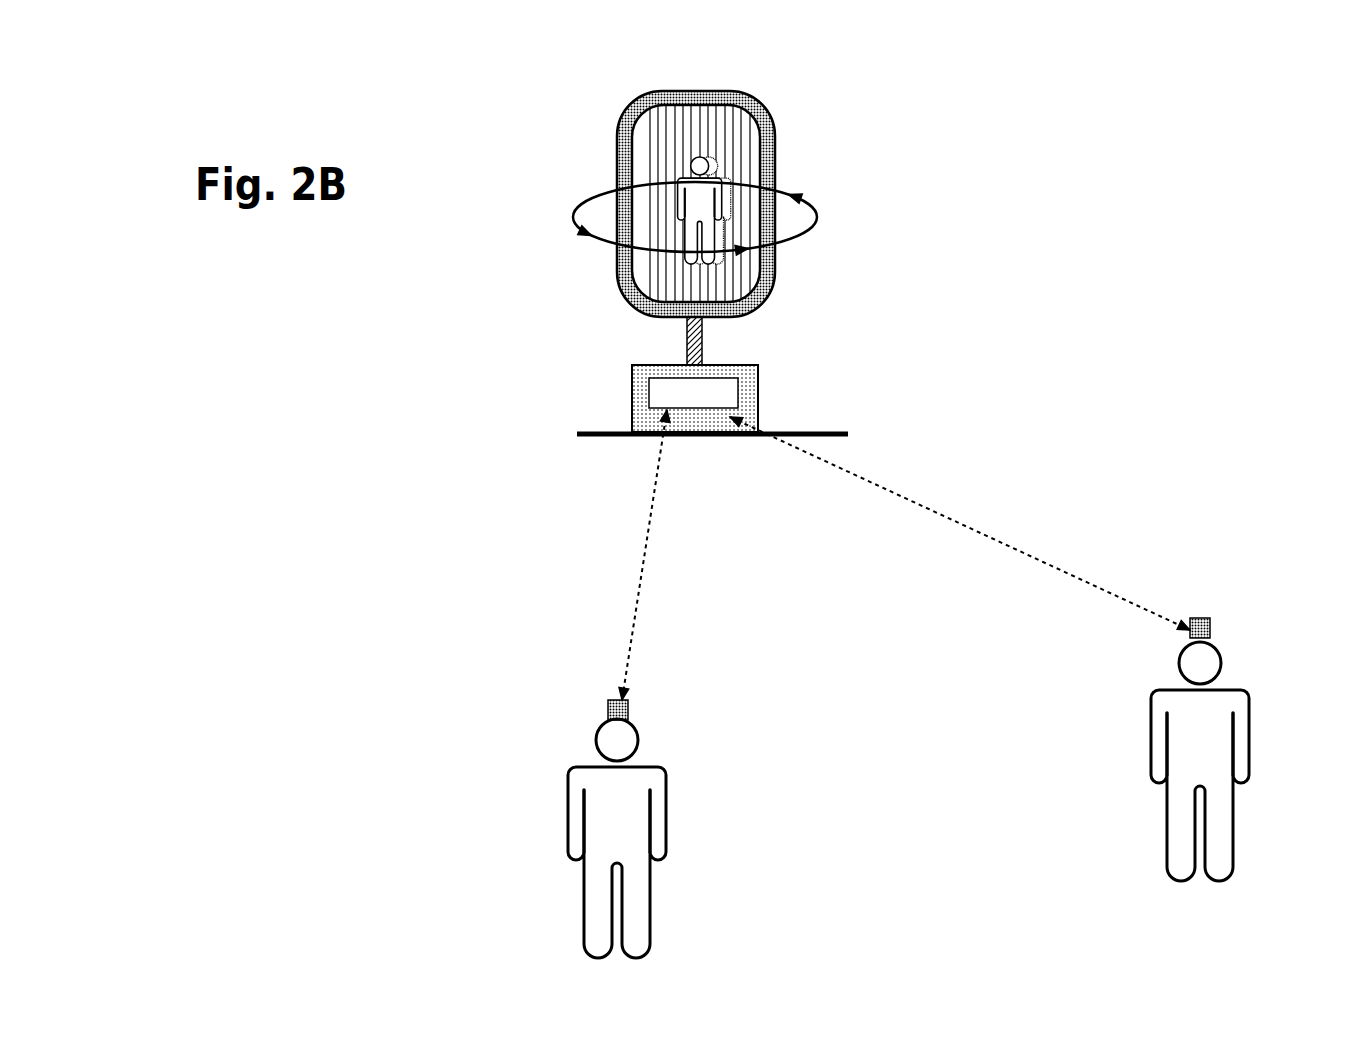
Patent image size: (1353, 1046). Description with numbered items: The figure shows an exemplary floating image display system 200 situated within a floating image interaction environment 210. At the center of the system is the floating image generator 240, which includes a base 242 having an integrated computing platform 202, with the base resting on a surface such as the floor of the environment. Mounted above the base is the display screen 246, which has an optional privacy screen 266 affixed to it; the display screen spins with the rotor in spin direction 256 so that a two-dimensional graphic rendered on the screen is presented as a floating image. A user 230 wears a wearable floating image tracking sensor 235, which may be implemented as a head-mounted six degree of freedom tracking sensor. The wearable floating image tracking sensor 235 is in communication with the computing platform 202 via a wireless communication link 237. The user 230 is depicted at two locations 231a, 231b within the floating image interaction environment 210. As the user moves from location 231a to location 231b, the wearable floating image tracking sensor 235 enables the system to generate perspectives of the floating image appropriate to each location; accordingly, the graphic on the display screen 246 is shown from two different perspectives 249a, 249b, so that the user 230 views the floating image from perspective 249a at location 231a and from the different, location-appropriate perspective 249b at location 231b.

The floating image display system 200 is at (1202, 125).
The floating image generator 240 is at (858, 98).
The display screen 246 is at (768, 117).
The privacy screen 266 is at (685, 189).
The perspective 249a is at (695, 146).
The perspective 249b is at (724, 176).
The spin direction 256 is at (817, 220).
The base 242 is at (703, 350).
The computing platform 202 is at (711, 405).
The wireless communication link 237 is at (634, 627).
The wearable floating image tracking sensor 235 is at (630, 706).
The user 230 is at (897, 800).
The location 231a is at (577, 953).
The location 231b is at (1242, 875).
The floating image interaction environment 210 is at (1222, 948).